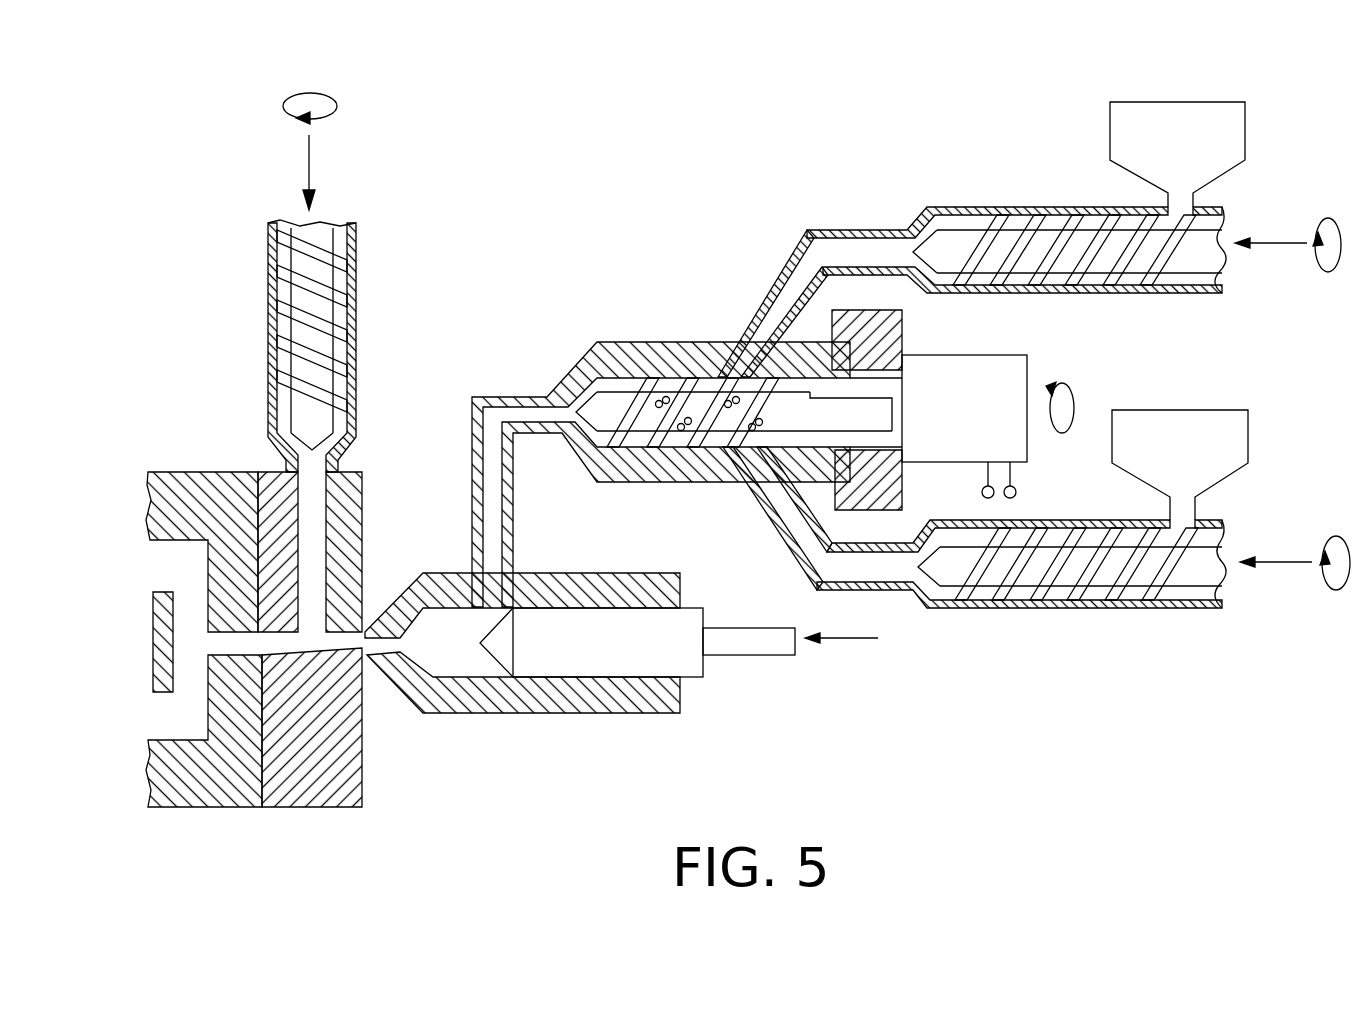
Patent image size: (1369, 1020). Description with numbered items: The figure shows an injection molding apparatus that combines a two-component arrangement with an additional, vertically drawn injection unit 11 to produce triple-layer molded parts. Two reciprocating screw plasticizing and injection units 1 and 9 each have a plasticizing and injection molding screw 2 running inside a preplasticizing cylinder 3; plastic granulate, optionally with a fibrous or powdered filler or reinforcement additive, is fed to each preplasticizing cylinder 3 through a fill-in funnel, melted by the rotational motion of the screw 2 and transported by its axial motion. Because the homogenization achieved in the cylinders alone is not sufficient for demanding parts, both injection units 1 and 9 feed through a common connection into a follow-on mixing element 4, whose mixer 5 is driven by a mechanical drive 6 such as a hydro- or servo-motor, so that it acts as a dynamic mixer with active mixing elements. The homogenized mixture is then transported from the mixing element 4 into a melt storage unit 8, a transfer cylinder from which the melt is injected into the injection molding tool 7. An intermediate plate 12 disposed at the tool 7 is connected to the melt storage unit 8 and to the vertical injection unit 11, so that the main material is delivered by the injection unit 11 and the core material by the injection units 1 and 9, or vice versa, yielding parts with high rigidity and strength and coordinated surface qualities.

The reciprocating screw plasticizing and injection unit 1 is at (1067, 122).
The plasticizing and injection molding screw 2 is at (322, 377).
The preplasticizing cylinder 3 is at (952, 208).
The mixing element 4 is at (603, 355).
The mixer 5 is at (693, 383).
The mechanical drive 6 is at (990, 370).
The injection molding tool 7 is at (172, 478).
The melt storage unit 8 is at (575, 665).
The reciprocating screw plasticizing and injection unit 9 is at (1192, 690).
The injection unit 11 is at (409, 296).
The intermediate plate 12 is at (315, 785).